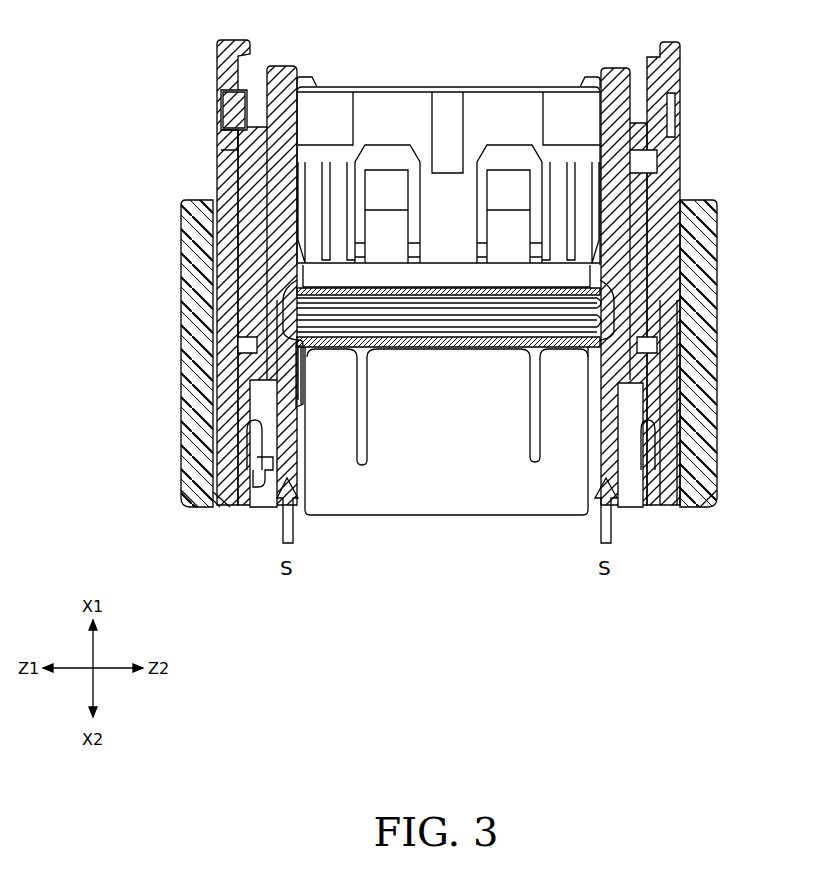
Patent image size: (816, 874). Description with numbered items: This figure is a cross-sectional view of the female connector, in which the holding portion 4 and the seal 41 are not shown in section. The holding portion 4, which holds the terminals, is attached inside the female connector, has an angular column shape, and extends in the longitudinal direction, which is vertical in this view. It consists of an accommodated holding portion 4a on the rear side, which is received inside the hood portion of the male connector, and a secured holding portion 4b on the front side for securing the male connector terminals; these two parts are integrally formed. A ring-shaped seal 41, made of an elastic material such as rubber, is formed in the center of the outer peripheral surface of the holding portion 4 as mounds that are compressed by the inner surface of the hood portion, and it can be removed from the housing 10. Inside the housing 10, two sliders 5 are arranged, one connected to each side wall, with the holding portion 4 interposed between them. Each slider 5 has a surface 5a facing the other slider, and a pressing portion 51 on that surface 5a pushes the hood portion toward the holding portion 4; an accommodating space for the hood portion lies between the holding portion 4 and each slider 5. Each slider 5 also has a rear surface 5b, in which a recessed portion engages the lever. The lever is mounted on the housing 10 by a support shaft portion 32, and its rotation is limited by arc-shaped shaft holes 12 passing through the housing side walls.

The holding portion 4 is at (450, 88).
The accommodated holding portion 4a is at (436, 500).
The secured holding portion 4b is at (378, 103).
The seal 41 is at (422, 357).
The slider 5 is at (247, 288).
The surface 5a is at (300, 385).
The rear surface 5b is at (226, 508).
The pressing portion 51 is at (285, 300).
The housing 10 is at (217, 180).
The shaft holes 12 is at (228, 260).
The support shaft portion 32 is at (181, 410).